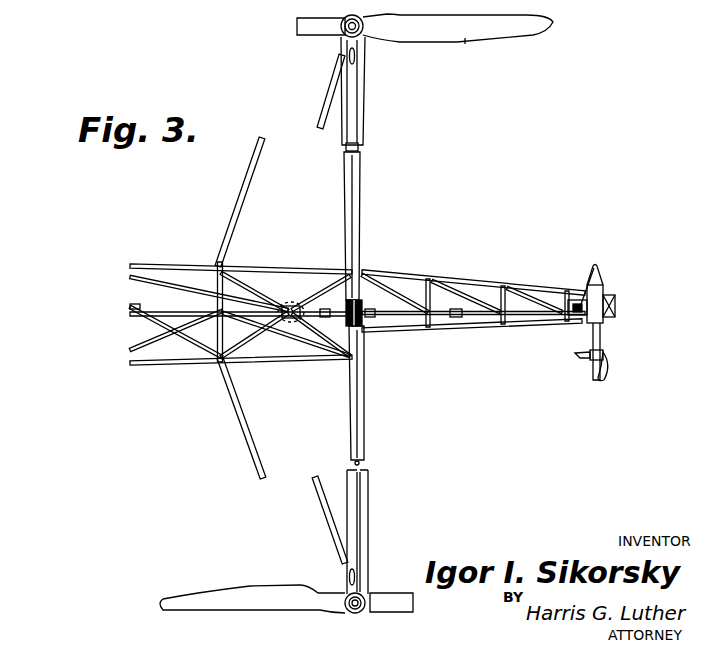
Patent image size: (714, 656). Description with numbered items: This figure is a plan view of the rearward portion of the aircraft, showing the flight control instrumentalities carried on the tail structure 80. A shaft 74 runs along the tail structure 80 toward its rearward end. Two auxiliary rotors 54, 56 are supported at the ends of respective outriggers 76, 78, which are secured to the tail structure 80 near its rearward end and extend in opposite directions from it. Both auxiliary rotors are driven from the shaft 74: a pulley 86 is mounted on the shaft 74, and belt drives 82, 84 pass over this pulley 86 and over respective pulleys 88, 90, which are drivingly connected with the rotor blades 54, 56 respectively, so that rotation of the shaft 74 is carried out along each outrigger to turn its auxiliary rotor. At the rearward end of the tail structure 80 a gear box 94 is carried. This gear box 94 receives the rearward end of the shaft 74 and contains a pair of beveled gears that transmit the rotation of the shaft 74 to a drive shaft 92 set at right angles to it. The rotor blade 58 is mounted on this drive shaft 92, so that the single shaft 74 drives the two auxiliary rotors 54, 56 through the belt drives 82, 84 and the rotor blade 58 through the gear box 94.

The auxiliary rotor 54 is at (463, 36).
The auxiliary rotor 56 is at (263, 592).
The rotor blade 58 is at (612, 352).
The shaft 74 is at (160, 312).
The outrigger 76 is at (327, 103).
The outrigger 78 is at (357, 463).
The tail structure 80 is at (185, 368).
The belt drive 82 is at (359, 187).
The belt drive 84 is at (364, 412).
The pulley 86 is at (363, 320).
The pulley 88 is at (345, 17).
The pulley 90 is at (357, 614).
The drive shaft 92 is at (592, 337).
The gear box 94 is at (603, 300).